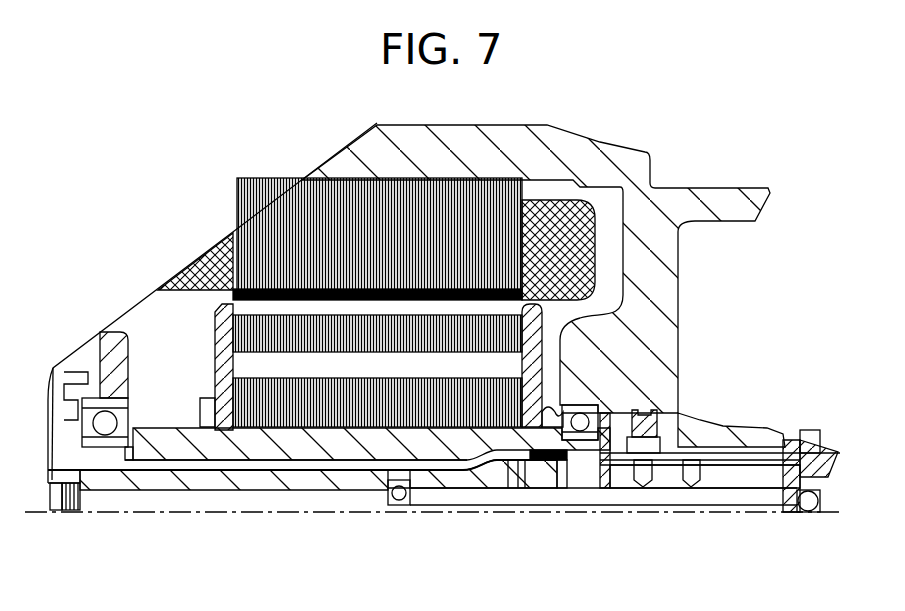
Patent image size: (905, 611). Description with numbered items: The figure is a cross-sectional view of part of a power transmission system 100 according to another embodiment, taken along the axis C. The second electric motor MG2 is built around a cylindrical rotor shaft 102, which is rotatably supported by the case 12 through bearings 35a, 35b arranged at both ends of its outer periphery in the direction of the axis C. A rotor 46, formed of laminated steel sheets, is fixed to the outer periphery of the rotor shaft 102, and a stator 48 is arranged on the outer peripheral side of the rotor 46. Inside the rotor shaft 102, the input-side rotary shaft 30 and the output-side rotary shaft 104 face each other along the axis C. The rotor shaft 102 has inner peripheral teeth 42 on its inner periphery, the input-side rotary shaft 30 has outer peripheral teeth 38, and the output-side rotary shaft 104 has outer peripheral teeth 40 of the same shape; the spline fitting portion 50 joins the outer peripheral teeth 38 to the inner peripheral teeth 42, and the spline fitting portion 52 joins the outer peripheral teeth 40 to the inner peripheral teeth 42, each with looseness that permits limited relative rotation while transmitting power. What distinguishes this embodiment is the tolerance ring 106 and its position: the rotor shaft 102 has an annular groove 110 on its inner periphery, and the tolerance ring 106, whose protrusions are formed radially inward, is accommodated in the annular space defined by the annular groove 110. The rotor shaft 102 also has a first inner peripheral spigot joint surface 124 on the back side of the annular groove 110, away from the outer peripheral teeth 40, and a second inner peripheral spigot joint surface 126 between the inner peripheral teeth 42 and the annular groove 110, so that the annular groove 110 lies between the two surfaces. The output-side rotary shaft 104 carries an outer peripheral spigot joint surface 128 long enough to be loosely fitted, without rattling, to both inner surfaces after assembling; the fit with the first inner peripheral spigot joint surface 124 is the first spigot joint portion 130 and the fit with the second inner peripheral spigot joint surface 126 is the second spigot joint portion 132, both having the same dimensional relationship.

The power transmission system 100 is at (152, 214).
The second electric motor MG2 is at (232, 238).
The stator 48 is at (305, 218).
The case 12 is at (663, 205).
The bearing 35a is at (107, 423).
The rotor 46 is at (255, 333).
The bearing 35b is at (580, 405).
The outer peripheral spigot joint surface 128 is at (680, 418).
The axis C is at (60, 513).
The input-side rotary shaft 30 is at (150, 516).
The spline fitting portion 50 is at (270, 480).
The outer peripheral teeth 38 is at (282, 492).
The rotor shaft 102 is at (325, 478).
The inner peripheral teeth 42 is at (342, 473).
The outer peripheral teeth 40 is at (419, 494).
The spline fitting portion 52 is at (432, 483).
The second inner peripheral spigot joint surface 126 is at (508, 498).
The second spigot joint portion 132 is at (523, 479).
The tolerance ring 106 is at (560, 467).
The annular groove 110 is at (559, 507).
The first inner peripheral spigot joint surface 124 is at (598, 470).
The first spigot joint portion 130 is at (630, 475).
The output-side rotary shaft 104 is at (748, 521).